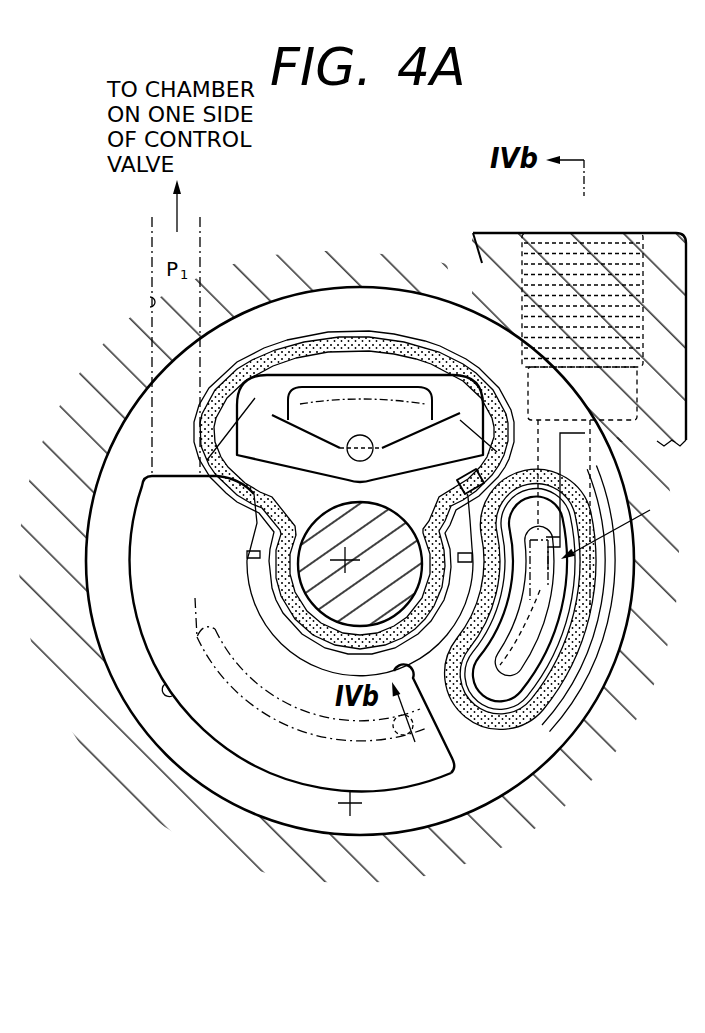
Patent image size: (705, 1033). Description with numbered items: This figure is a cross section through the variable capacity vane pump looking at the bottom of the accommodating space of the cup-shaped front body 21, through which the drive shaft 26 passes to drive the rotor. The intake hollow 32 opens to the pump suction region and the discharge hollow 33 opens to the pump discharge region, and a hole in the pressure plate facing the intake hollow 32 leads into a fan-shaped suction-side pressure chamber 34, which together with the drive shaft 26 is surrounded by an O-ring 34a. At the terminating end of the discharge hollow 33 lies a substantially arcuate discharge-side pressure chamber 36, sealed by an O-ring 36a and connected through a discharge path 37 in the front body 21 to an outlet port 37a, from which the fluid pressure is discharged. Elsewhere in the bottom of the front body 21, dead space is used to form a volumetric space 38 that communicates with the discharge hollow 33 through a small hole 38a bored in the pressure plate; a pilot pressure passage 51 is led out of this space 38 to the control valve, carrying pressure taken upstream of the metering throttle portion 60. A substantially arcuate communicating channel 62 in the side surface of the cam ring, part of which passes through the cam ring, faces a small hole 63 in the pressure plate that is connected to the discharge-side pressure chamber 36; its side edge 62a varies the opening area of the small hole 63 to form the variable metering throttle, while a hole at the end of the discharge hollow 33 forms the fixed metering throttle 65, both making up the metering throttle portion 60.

The front body 21 is at (64, 438).
The drive shaft 26 is at (310, 570).
The intake hollow 32 is at (444, 405).
The discharge hollow 33 is at (290, 722).
The suction-side pressure chamber 34 is at (262, 398).
The O-ring 34a is at (357, 343).
The discharge-side pressure chamber 36 is at (580, 605).
The O-ring 36a is at (588, 595).
The discharge path 37 is at (594, 470).
The outlet port 37a is at (630, 233).
The space 38 is at (170, 690).
The small hole 38a is at (430, 740).
The pilot pressure passage 51 is at (150, 302).
The metering throttle portion 60 is at (619, 528).
The communicating channel 62 is at (570, 700).
The side edge 62a is at (480, 537).
The small hole 63 is at (560, 575).
The fixed metering throttle 65 is at (565, 660).